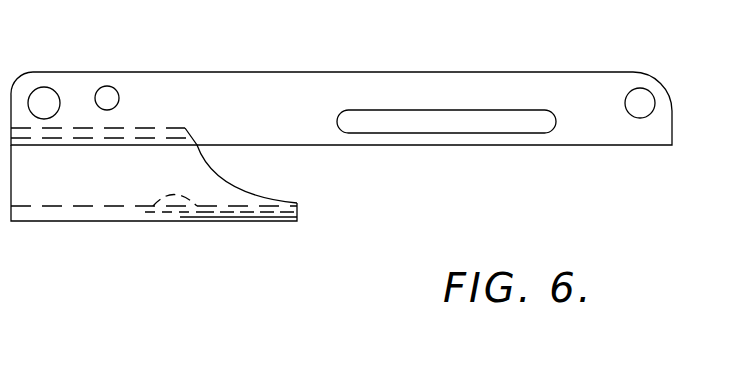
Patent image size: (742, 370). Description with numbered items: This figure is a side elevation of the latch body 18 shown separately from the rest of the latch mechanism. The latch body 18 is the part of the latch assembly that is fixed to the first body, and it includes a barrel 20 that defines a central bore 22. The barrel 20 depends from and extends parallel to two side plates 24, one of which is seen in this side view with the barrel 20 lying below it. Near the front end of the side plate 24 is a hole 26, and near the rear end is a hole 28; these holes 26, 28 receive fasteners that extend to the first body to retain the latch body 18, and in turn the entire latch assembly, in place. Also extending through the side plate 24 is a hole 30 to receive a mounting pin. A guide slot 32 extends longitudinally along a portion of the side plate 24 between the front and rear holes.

The latch body 18 is at (73, 221).
The barrel 20 is at (250, 193).
The central bore 22 is at (205, 222).
The side plates 24 is at (191, 74).
The holes 26 is at (46, 95).
The holes 28 is at (647, 98).
The holes 30 is at (108, 93).
The guide slots 32 is at (367, 114).